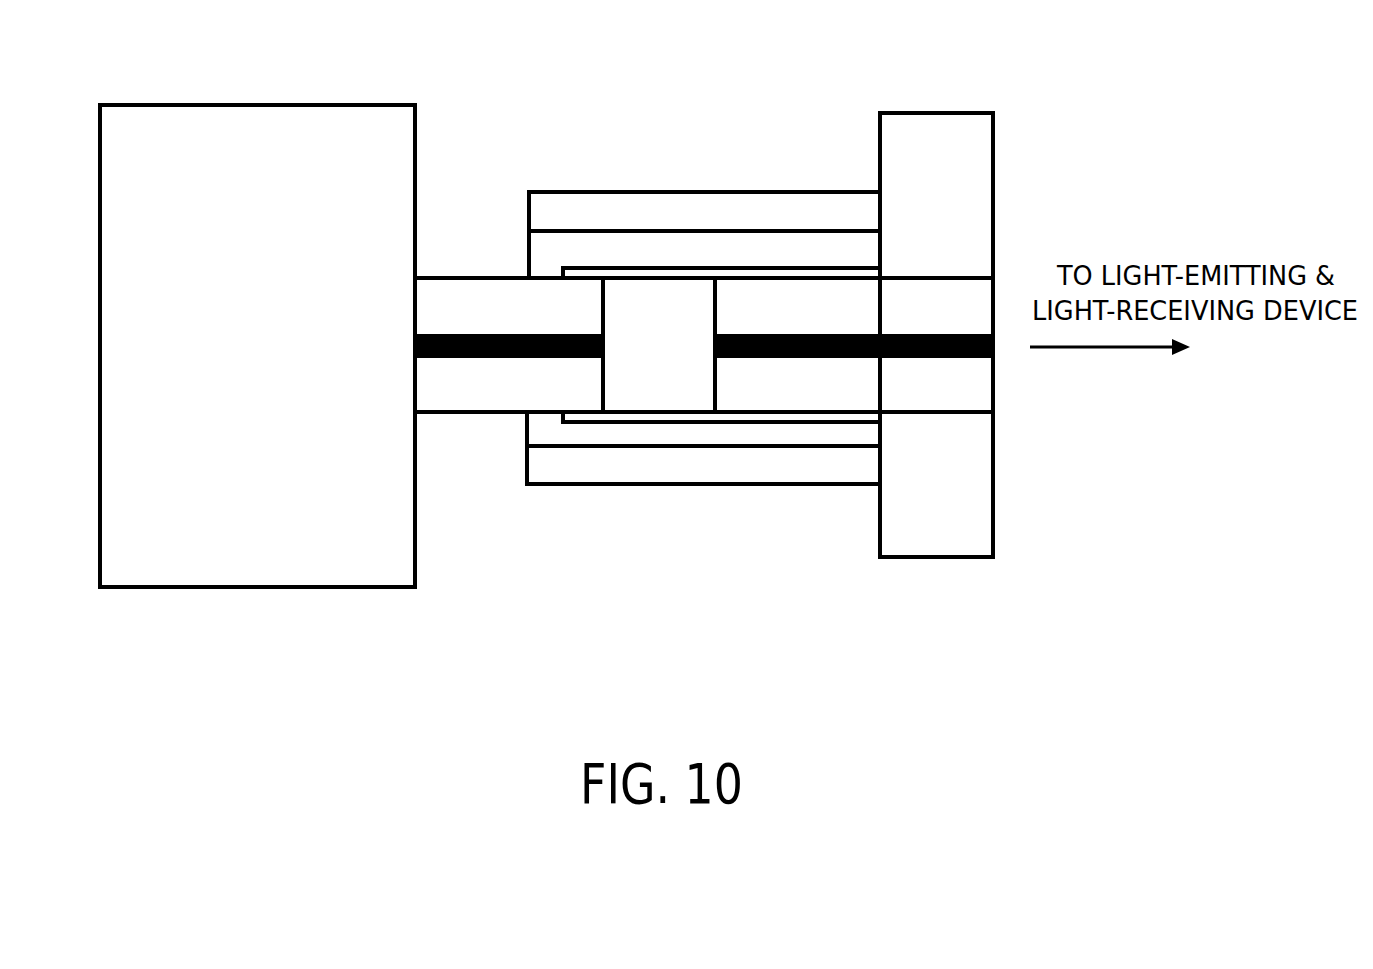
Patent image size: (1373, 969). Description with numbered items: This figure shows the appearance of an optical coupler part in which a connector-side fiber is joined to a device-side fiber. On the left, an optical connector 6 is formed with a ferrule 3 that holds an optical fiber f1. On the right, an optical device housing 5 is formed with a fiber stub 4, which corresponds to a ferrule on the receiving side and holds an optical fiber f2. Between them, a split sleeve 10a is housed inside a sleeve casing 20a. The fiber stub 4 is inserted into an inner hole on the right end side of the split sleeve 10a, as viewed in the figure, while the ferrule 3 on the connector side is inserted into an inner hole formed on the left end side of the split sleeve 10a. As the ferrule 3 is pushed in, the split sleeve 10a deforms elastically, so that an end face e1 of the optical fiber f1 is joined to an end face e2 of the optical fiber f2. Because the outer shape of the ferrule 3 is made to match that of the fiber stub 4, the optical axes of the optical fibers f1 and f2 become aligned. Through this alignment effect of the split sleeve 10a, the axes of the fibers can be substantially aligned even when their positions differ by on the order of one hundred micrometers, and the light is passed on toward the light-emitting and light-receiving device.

The optical connector 6 is at (100, 212).
The ferrule 3 is at (452, 278).
The fiber stub 4 is at (993, 393).
The optical device housing 5 is at (970, 113).
The sleeve casing 20a is at (845, 193).
The split sleeve 10a is at (790, 268).
The end face of optical fiber f1 e1 is at (603, 346).
The end face of optical fiber f2 e2 is at (715, 346).
The optical fiber f1 is at (455, 357).
The optical fiber f2 is at (921, 340).